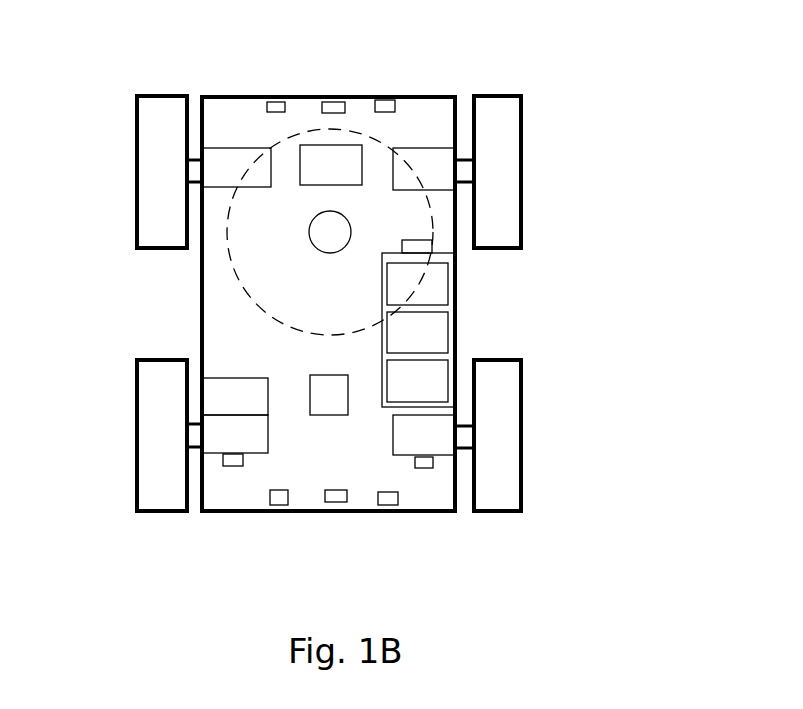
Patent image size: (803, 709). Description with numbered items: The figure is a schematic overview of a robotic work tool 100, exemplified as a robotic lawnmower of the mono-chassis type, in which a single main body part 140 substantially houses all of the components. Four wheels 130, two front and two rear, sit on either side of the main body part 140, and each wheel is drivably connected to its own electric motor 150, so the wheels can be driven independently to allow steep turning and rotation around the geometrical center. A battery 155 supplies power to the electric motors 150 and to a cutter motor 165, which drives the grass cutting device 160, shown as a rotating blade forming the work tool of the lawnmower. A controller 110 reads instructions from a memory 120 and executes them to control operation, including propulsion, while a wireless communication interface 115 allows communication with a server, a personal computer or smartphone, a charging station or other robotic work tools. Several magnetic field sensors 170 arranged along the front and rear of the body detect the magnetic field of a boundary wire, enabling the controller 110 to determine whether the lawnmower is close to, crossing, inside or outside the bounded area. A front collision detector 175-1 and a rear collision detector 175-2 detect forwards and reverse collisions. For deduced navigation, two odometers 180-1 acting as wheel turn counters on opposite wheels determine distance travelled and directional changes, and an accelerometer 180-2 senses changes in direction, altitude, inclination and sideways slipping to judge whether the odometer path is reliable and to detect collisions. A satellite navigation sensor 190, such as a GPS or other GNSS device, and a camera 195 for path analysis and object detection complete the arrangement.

The robotic work tool 100 is at (186, 88).
The controller 110 is at (417, 332).
The wireless communication interface 115 is at (417, 284).
The memory 120 is at (417, 381).
The wheels 130 is at (158, 96).
The main body part 140 is at (232, 97).
The electric motor 150 is at (329, 301).
The battery 155 is at (235, 396).
The grass cutting device 160 is at (244, 288).
The cutter motor 165 is at (309, 231).
The magnetic field sensor 170 is at (288, 101).
The front collision detector 175-1 is at (333, 102).
The rear collision detector 175-2 is at (333, 503).
The odometers 180-1 is at (233, 466).
The accelerometer 180-2 is at (322, 390).
The satellite navigation sensor 190 is at (432, 247).
The camera 195 is at (331, 165).